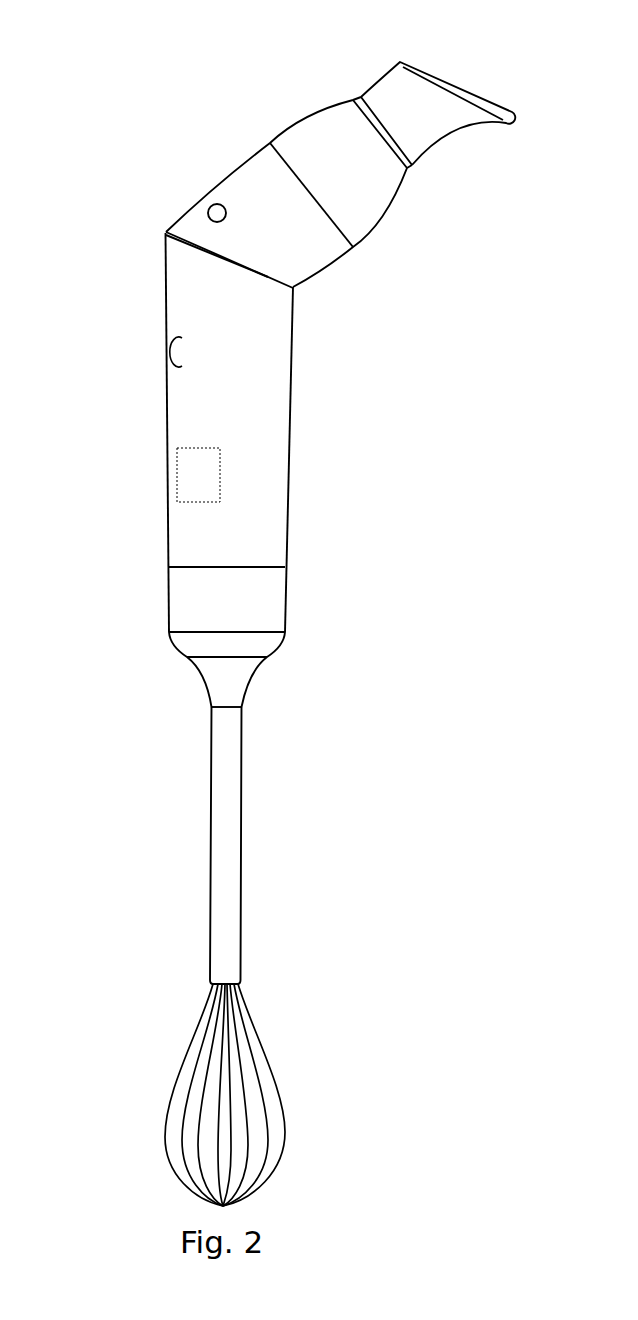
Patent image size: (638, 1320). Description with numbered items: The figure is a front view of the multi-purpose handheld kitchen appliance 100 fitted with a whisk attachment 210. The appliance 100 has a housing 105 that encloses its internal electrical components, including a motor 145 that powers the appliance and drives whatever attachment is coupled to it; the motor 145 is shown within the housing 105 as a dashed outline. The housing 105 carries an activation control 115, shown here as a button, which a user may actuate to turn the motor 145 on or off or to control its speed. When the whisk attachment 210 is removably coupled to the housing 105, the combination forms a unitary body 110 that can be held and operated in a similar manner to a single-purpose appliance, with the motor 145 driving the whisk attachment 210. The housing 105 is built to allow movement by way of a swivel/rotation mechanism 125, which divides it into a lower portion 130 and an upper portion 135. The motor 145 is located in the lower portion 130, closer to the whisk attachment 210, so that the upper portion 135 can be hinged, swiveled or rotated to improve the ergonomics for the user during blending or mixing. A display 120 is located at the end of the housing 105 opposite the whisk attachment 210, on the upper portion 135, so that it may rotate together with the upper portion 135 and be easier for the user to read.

The multi-purpose handheld kitchen appliance 100 is at (99, 177).
The housing 105 is at (273, 452).
The unitary body 110 is at (143, 695).
The activation control 115 is at (210, 206).
The display 120 is at (417, 65).
The swivel/rotation mechanism 125 is at (165, 231).
The lower portion 130 is at (273, 520).
The upper portion 135 is at (260, 168).
The motor 145 is at (195, 477).
The whisk attachment 210 is at (227, 893).